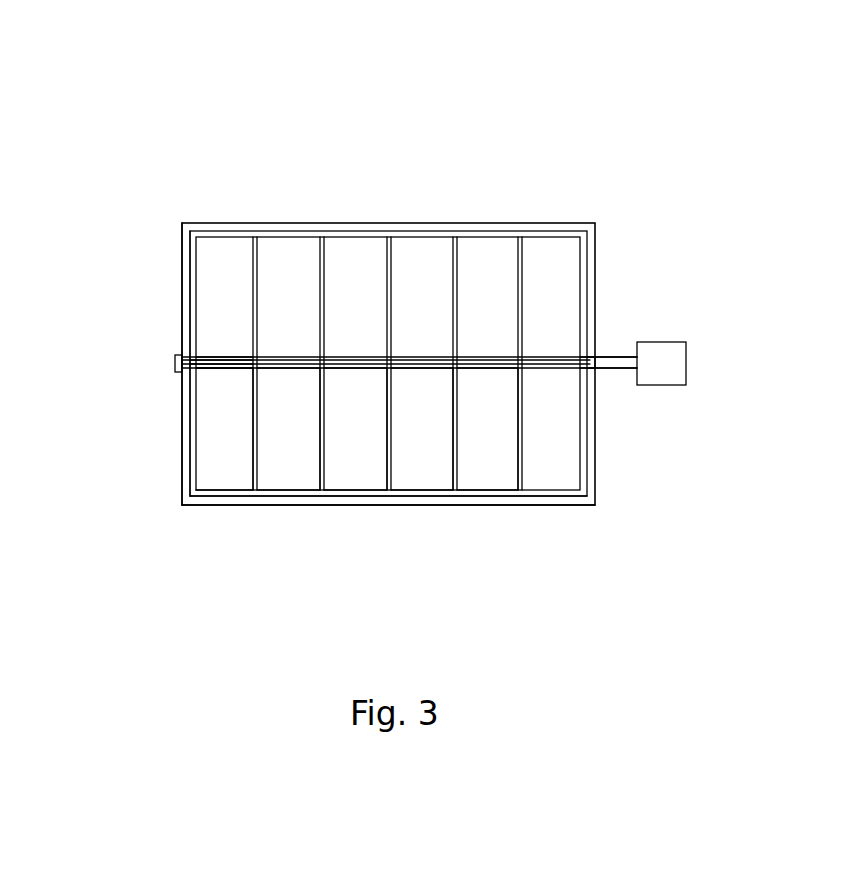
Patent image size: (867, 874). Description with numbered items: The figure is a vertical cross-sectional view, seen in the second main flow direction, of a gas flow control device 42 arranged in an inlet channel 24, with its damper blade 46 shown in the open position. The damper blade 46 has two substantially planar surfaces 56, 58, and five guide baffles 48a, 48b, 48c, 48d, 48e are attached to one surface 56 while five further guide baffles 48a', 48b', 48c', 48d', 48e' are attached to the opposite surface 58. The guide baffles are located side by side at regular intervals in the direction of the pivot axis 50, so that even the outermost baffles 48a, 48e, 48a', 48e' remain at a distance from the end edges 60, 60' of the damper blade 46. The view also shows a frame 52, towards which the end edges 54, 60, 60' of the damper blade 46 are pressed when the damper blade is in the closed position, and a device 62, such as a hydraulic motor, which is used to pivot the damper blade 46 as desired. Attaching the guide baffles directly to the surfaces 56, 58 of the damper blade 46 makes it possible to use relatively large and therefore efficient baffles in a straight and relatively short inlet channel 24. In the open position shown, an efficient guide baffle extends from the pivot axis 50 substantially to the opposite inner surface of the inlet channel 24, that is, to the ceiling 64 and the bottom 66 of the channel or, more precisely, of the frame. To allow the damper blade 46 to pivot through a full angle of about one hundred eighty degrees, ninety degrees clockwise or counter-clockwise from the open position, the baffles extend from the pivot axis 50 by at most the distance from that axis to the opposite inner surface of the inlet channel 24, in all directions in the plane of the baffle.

The gas flow control device 42 is at (512, 107).
The inlet channel 24 is at (550, 229).
The ceiling 64 is at (572, 234).
The frame 52 is at (223, 237).
The bottom 66 is at (556, 490).
The guide baffle 48a is at (243, 311).
The guide baffle 48b is at (316, 292).
The guide baffle 48c is at (380, 315).
The guide baffle 48d is at (446, 292).
The guide baffle 48e is at (515, 312).
The guide baffle 48a' is at (237, 487).
The guide baffle 48b' is at (305, 469).
The guide baffle 48c' is at (369, 491).
The guide baffle 48d' is at (436, 469).
The guide baffle 48e' is at (502, 488).
The end edge 54 is at (527, 358).
The pivot axis 50 is at (592, 357).
The planar surface 56 is at (235, 357).
The damper blade 46 is at (213, 360).
The planar surface 58 is at (235, 370).
The end edge 60 is at (112, 382).
The end edge 60' is at (634, 409).
The device 62 is at (688, 373).